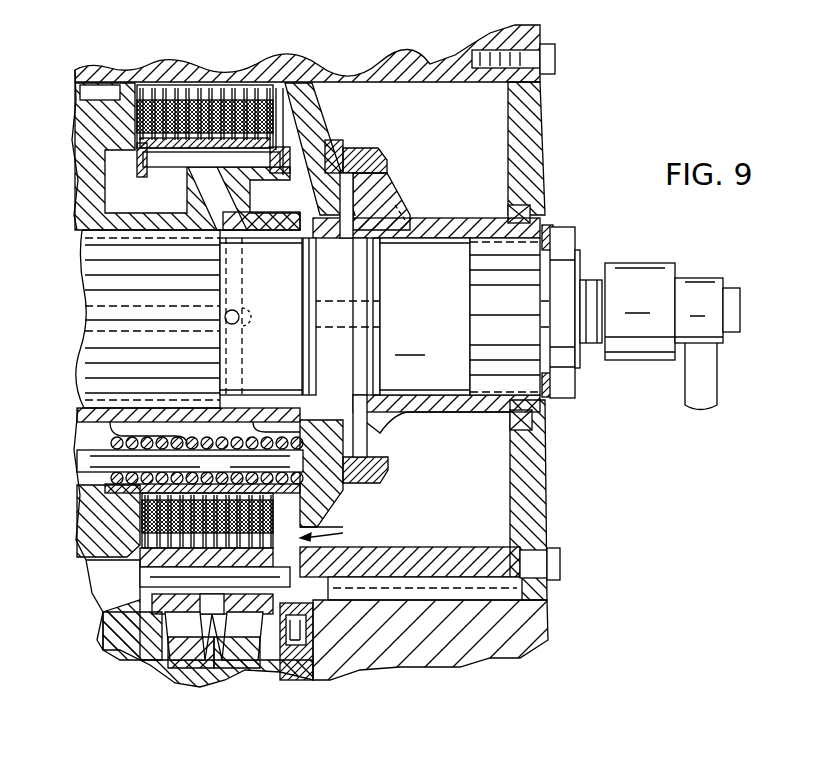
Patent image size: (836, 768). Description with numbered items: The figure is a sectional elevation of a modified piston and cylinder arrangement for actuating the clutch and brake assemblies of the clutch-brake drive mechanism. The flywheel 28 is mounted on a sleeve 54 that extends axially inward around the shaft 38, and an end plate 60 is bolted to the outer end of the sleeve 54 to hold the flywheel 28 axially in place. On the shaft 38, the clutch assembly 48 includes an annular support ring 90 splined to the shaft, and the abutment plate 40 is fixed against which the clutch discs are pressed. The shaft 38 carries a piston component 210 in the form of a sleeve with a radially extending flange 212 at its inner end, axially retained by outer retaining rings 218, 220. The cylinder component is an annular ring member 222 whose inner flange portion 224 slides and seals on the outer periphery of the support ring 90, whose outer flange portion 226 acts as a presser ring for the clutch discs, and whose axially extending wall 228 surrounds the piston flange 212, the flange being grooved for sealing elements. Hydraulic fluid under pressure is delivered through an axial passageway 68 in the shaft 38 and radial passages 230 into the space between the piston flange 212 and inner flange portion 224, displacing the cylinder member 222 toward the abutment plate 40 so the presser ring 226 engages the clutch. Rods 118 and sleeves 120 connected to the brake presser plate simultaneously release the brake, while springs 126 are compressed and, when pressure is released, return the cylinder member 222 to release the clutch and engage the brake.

The flywheel 28 is at (486, 665).
The shaft 38 is at (284, 289).
The abutment plate 40 is at (108, 118).
The clutch assembly 48 is at (342, 537).
The sleeve 54 is at (380, 68).
The end plate 60 is at (540, 112).
The axial passageway 68 is at (430, 318).
The annular support ring 90 is at (300, 140).
The rods 118 is at (337, 497).
The sleeves 120 is at (90, 462).
The springs 126 is at (115, 443).
The piston component 210 is at (492, 230).
The radially extending flange 212 is at (378, 188).
The outer retaining ring 218 is at (547, 225).
The outer retaining ring 220 is at (567, 243).
The annular ring member 222 is at (335, 133).
The inner flange portion 224 is at (320, 197).
The outer flange portion 226 is at (300, 95).
The axially extending wall 228 is at (378, 162).
The radial passages 230 is at (400, 213).